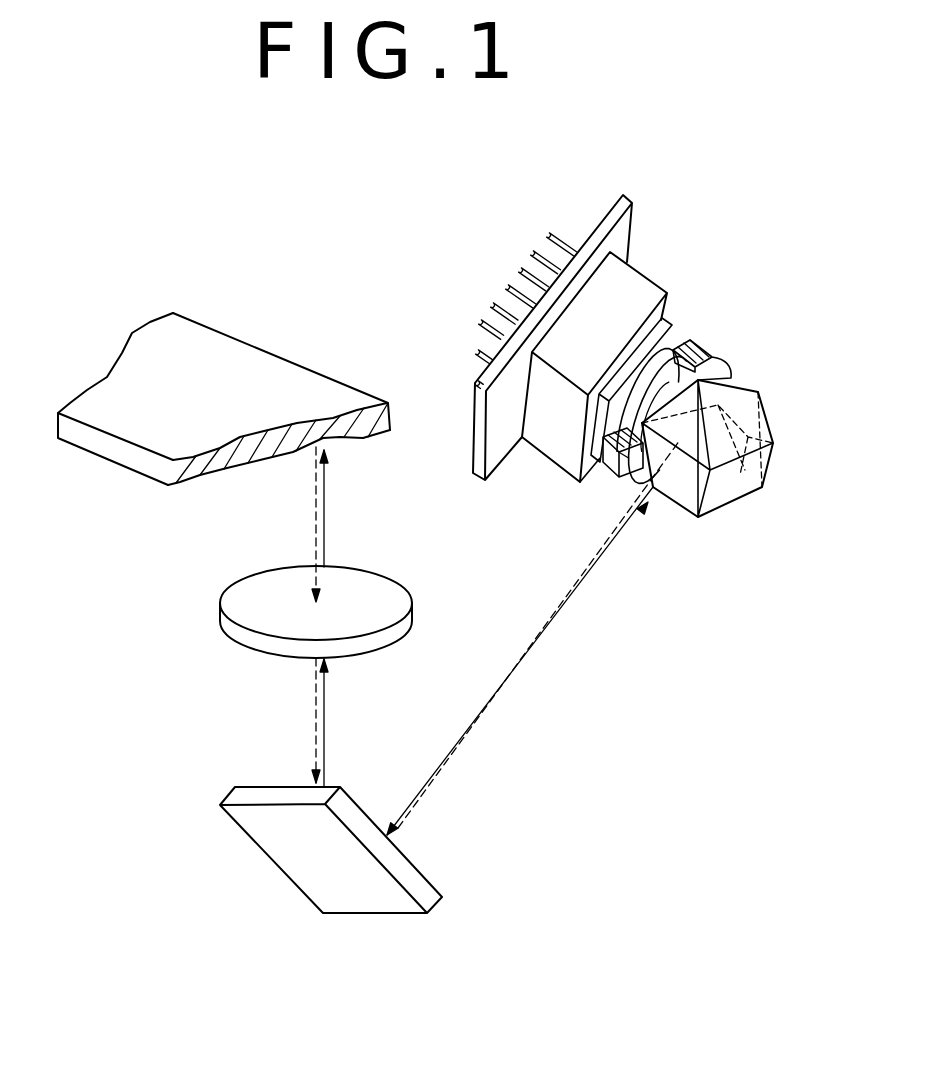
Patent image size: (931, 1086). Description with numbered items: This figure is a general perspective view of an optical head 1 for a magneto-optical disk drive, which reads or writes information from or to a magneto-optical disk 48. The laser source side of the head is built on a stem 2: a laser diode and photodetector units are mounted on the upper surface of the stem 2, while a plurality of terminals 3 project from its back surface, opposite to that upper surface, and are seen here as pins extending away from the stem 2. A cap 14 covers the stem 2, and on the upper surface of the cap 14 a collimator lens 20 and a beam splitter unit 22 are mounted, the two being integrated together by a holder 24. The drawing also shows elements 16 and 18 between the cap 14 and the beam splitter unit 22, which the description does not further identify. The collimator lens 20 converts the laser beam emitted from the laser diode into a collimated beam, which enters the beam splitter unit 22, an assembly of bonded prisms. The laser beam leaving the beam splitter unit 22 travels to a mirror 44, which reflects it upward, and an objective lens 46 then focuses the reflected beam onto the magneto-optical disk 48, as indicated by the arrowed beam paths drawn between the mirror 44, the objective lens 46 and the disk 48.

The optical head 1 is at (668, 549).
The stem 2 is at (603, 220).
The terminals 3 is at (493, 305).
The cap 14 is at (640, 283).
The holder plate 16 is at (662, 336).
The collimating lens 18 is at (642, 377).
The collimator lens 20 is at (620, 476).
The beam splitter unit 22 is at (768, 410).
The holder 24 is at (705, 353).
The mirror 44 is at (283, 860).
The objective lens 46 is at (235, 600).
The magneto-optical disk 48 is at (170, 338).